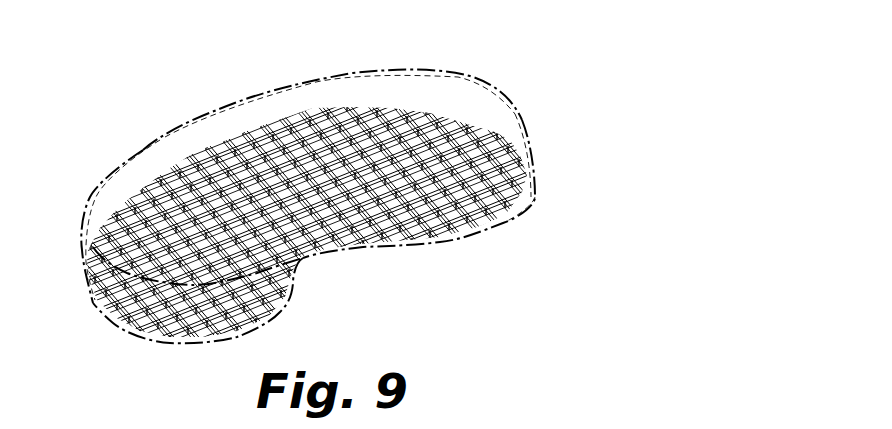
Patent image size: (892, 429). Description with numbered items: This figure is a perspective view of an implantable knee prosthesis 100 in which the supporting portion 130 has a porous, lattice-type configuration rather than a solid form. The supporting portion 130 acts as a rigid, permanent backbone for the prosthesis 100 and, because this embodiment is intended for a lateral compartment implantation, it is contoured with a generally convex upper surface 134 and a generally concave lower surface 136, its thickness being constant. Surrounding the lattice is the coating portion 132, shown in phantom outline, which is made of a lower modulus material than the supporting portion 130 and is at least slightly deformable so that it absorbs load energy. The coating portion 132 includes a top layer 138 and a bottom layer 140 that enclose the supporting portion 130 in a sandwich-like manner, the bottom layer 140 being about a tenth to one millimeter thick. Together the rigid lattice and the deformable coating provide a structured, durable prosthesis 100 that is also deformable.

The implantable knee prosthesis 100 is at (298, 199).
The supporting portion 130 is at (491, 143).
The coating portion 132 is at (461, 100).
The upper surface 134 is at (163, 138).
The lower surface 136 is at (348, 257).
The top layer 138 is at (257, 117).
The bottom layer 140 is at (494, 226).